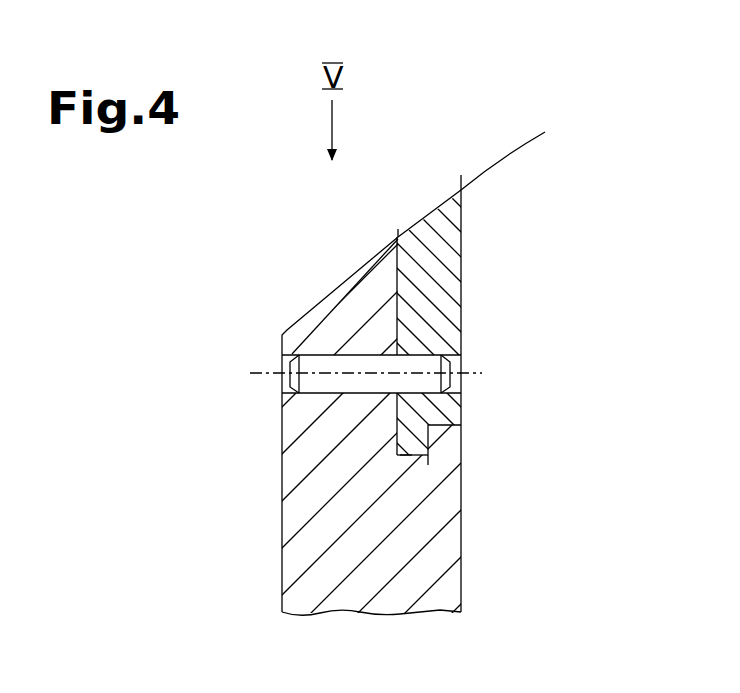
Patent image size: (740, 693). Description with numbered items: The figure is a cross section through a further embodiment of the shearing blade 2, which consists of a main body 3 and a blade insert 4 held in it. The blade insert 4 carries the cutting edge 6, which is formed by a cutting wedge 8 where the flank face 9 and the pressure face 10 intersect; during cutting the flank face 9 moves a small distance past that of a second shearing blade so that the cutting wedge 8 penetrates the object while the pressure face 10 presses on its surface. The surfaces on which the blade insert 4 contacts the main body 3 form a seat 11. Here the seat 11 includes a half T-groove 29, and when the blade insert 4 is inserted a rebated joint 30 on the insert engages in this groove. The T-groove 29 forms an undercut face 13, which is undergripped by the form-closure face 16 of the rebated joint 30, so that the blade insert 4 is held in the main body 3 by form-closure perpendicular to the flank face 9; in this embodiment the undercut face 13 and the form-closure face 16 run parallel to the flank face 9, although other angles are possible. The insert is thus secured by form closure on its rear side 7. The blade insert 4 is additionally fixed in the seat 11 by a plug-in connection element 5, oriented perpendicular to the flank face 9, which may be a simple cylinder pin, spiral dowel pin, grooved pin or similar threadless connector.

The shearing blade 2 is at (585, 214).
The main body 3 is at (292, 527).
The blade insert 4 is at (457, 243).
The plug-in connection element 5 is at (293, 362).
The cutting edge 6 is at (477, 170).
The rear side 7 is at (433, 470).
The cutting wedge 8 is at (463, 150).
The flank face 9 is at (466, 218).
The pressure face 10 is at (398, 233).
The seat 11 is at (388, 433).
The undercut face 13 is at (423, 458).
The form-closure face 16 is at (460, 432).
The half T-groove 29 is at (282, 454).
The rebated joint 30 is at (407, 462).